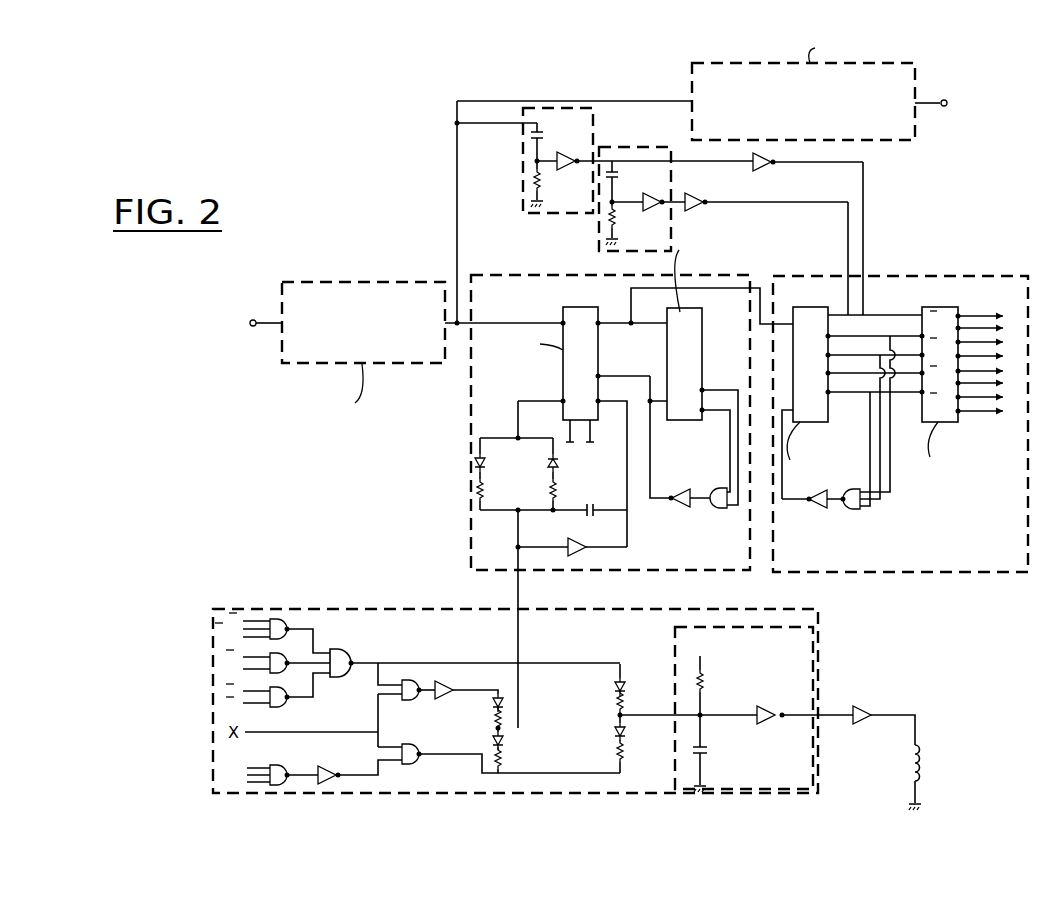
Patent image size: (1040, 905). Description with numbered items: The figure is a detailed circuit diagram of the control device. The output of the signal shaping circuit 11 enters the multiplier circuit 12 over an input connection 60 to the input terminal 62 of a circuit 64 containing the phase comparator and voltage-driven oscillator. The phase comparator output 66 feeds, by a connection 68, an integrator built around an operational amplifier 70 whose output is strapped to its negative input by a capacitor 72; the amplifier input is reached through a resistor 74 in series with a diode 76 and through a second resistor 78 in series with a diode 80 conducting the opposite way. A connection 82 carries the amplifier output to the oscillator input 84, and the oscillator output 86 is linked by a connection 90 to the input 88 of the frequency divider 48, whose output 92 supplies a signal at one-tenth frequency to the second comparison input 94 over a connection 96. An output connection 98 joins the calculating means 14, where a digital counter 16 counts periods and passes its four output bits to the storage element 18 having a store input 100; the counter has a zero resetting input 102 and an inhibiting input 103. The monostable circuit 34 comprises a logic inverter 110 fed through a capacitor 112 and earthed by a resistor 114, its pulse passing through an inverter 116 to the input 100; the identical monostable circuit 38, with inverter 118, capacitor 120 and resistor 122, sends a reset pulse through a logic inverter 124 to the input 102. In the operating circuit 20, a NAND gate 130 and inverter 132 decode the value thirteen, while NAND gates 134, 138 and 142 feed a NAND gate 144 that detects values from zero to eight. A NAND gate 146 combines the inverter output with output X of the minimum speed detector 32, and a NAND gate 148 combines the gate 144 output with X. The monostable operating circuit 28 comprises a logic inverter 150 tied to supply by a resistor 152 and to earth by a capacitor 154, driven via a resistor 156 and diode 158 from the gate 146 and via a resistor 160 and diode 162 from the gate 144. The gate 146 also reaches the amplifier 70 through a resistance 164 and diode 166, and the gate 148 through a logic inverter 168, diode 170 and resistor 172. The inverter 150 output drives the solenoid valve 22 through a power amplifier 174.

The signal shaping circuit 11 is at (360, 282).
The multiplier circuit 12 is at (514, 269).
The calculating means 14 is at (995, 275).
The digital counter 16 is at (803, 307).
The storage element 18 is at (946, 307).
The operating circuit 20 is at (823, 639).
The solenoid valve 22 is at (921, 772).
The monostable operating circuit 28 is at (762, 622).
The minimum speed detector circuit 32 is at (918, 68).
The monostable circuit 34 is at (566, 106).
The monostable circuit 38 is at (642, 147).
The frequency divider 48 is at (702, 340).
The input connection 60 is at (491, 323).
The input terminal 62 is at (562, 321).
The circuit 64 is at (575, 307).
The output of the phase comparator 66 is at (561, 399).
The connection 68 is at (518, 400).
The operational amplifier 70 is at (586, 546).
The capacitor 72 is at (594, 508).
The resistor 74 is at (476, 494).
The diode 76 is at (474, 463).
The second resistor 78 is at (560, 492).
The diode 80 is at (558, 462).
The connection 82 is at (628, 412).
The input of the voltage-driven oscillator 84 is at (594, 424).
The output of the oscillator 86 is at (600, 323).
The input of the frequency divider 88 is at (663, 323).
The connection 90 is at (640, 323).
The output of the frequency divider 92 is at (654, 412).
The second comparison input 94 is at (598, 376).
The connection 96 is at (618, 376).
The output connection 98 is at (735, 287).
The input of the storage element 100 is at (920, 316).
The zero resetting input 102 is at (832, 320).
The inhibiting input 103 is at (792, 410).
The logic inverter 110 is at (575, 157).
The capacitor 112 is at (543, 133).
The resistor 114 is at (542, 186).
The inverter 116 is at (766, 170).
The logic inverter 118 is at (660, 198).
The capacitor 120 is at (616, 180).
The resistor 122 is at (618, 228).
The logic inverter 124 is at (700, 208).
The NAND gate 130 is at (278, 772).
The logic inverter 132 is at (330, 772).
The first NAND gate 134 is at (281, 696).
The second NAND gate 138 is at (280, 661).
The third NAND gate 142 is at (286, 624).
The NAND gate 144 is at (348, 652).
The NAND gate 146 is at (417, 762).
The NAND gate 148 is at (412, 680).
The logic inverter 150 is at (773, 708).
The resistor 152 is at (706, 680).
The capacitor 154 is at (706, 752).
The resistor 156 is at (627, 756).
The diode 158 is at (628, 734).
The resistor 160 is at (628, 700).
The diode 162 is at (625, 682).
The resistance 164 is at (505, 760).
The diode 166 is at (510, 742).
The logic inverter 168 is at (453, 688).
The diode 170 is at (495, 718).
The resistor 172 is at (505, 712).
The power amplifier 174 is at (875, 710).